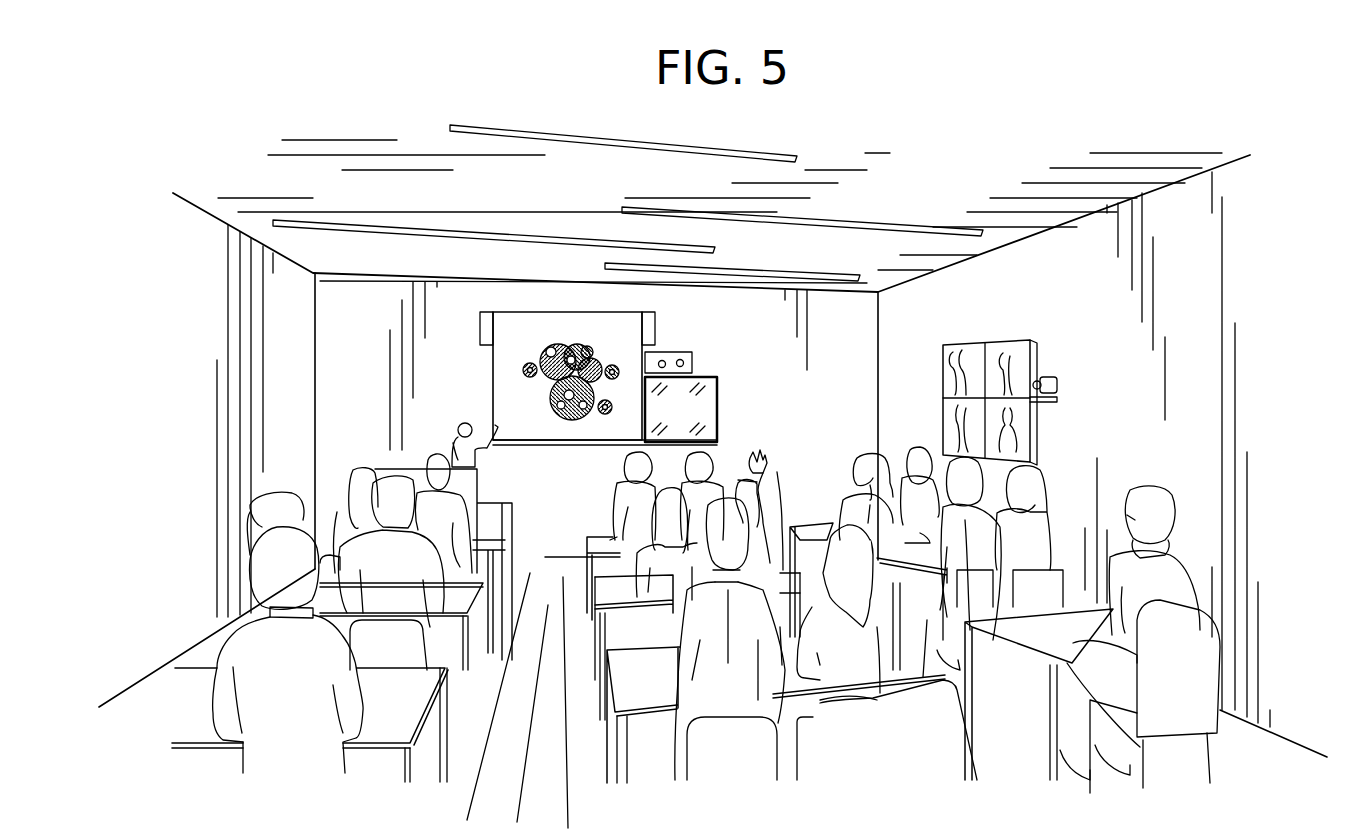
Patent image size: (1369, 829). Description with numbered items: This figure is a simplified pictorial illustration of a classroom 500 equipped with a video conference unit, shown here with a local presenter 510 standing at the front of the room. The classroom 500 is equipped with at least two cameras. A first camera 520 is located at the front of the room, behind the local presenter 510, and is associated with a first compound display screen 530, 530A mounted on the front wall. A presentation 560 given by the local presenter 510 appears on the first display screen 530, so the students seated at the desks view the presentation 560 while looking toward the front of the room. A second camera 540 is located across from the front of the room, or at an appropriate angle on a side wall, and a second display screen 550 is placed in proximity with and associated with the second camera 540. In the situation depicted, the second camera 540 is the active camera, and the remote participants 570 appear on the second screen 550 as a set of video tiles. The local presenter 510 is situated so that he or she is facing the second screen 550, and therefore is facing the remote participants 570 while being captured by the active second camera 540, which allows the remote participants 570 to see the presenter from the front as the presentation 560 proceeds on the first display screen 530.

The classroom 500 is at (1138, 92).
The local presenter 510 is at (462, 423).
The first camera 520 is at (693, 352).
The first display screen 530 is at (578, 312).
The first compound display screen portion 530A is at (718, 400).
The second camera 540 is at (1052, 371).
The second display screen 550 is at (1017, 348).
The presentation 560 is at (556, 337).
The remote participants 570 is at (935, 348).